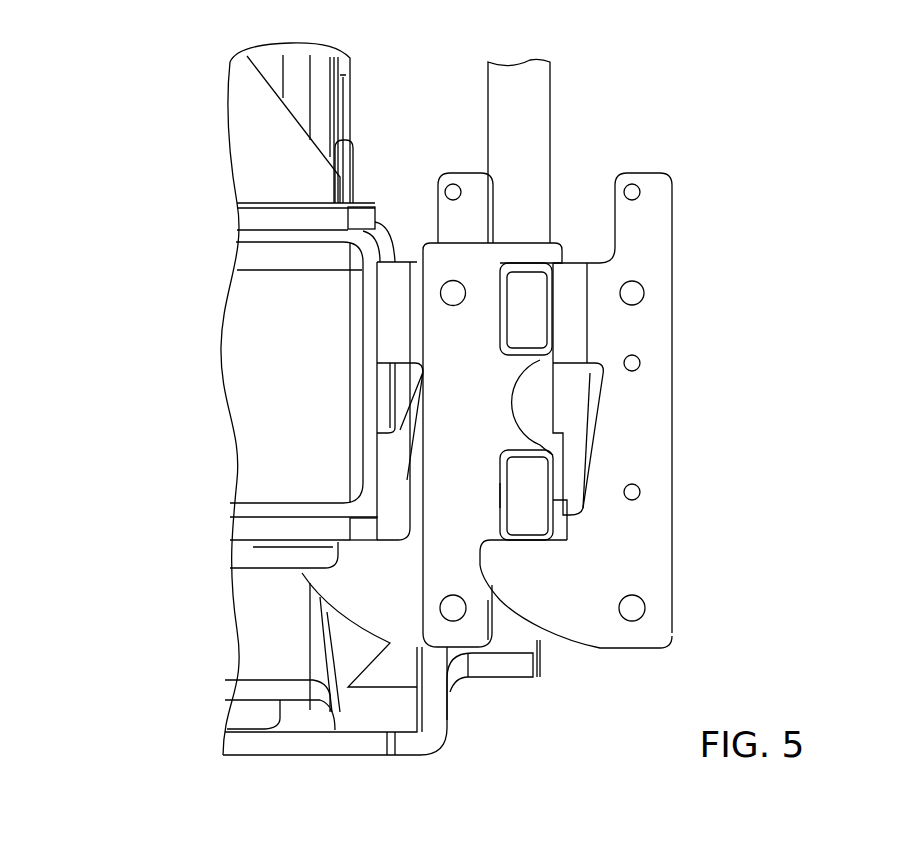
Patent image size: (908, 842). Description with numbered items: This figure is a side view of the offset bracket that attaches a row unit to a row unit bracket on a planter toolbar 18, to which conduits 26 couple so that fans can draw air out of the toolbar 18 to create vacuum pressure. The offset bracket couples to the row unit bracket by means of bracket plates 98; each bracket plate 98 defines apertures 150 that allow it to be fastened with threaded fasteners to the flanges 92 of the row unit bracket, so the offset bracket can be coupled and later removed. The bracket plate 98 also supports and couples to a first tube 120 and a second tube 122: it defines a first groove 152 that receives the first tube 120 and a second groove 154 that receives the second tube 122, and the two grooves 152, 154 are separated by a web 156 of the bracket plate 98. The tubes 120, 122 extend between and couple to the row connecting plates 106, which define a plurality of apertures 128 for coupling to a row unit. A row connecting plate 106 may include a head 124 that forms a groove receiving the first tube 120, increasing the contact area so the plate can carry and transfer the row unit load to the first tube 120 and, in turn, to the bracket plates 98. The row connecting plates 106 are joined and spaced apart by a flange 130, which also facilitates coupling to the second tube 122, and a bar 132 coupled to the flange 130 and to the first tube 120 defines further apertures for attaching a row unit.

The toolbar 18 is at (267, 517).
The conduit 26 is at (567, 540).
The flange 92 is at (470, 178).
The bracket plate 98 is at (472, 633).
The row connecting plate 106 is at (652, 582).
The first tube 120 is at (500, 508).
The second tube 122 is at (528, 267).
The head 124 is at (537, 588).
The aperture 128 is at (737, 323).
The flange 130 is at (572, 275).
The bar 132 is at (570, 455).
The aperture 150 is at (440, 311).
The first groove 152 is at (500, 483).
The second groove 154 is at (500, 345).
The web 156 is at (520, 410).